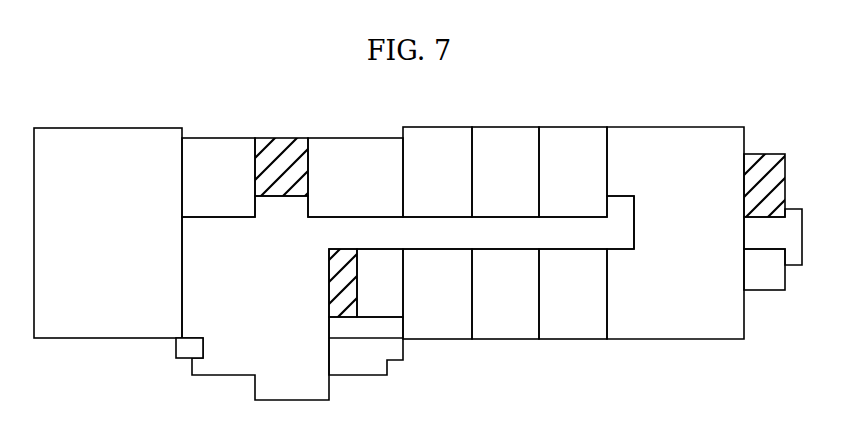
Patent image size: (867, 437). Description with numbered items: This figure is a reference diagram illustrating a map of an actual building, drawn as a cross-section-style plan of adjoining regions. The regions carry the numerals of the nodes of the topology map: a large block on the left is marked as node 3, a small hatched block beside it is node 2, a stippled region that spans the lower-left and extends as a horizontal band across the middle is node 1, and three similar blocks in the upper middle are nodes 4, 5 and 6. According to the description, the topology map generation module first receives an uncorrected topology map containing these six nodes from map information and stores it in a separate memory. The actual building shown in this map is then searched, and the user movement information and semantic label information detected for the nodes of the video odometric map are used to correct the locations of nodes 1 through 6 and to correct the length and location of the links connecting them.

The node 1 is at (492, 298).
The node 2 is at (245, 177).
The node 3 is at (108, 233).
The node 4 is at (437, 233).
The node 5 is at (505, 233).
The node 6 is at (573, 233).